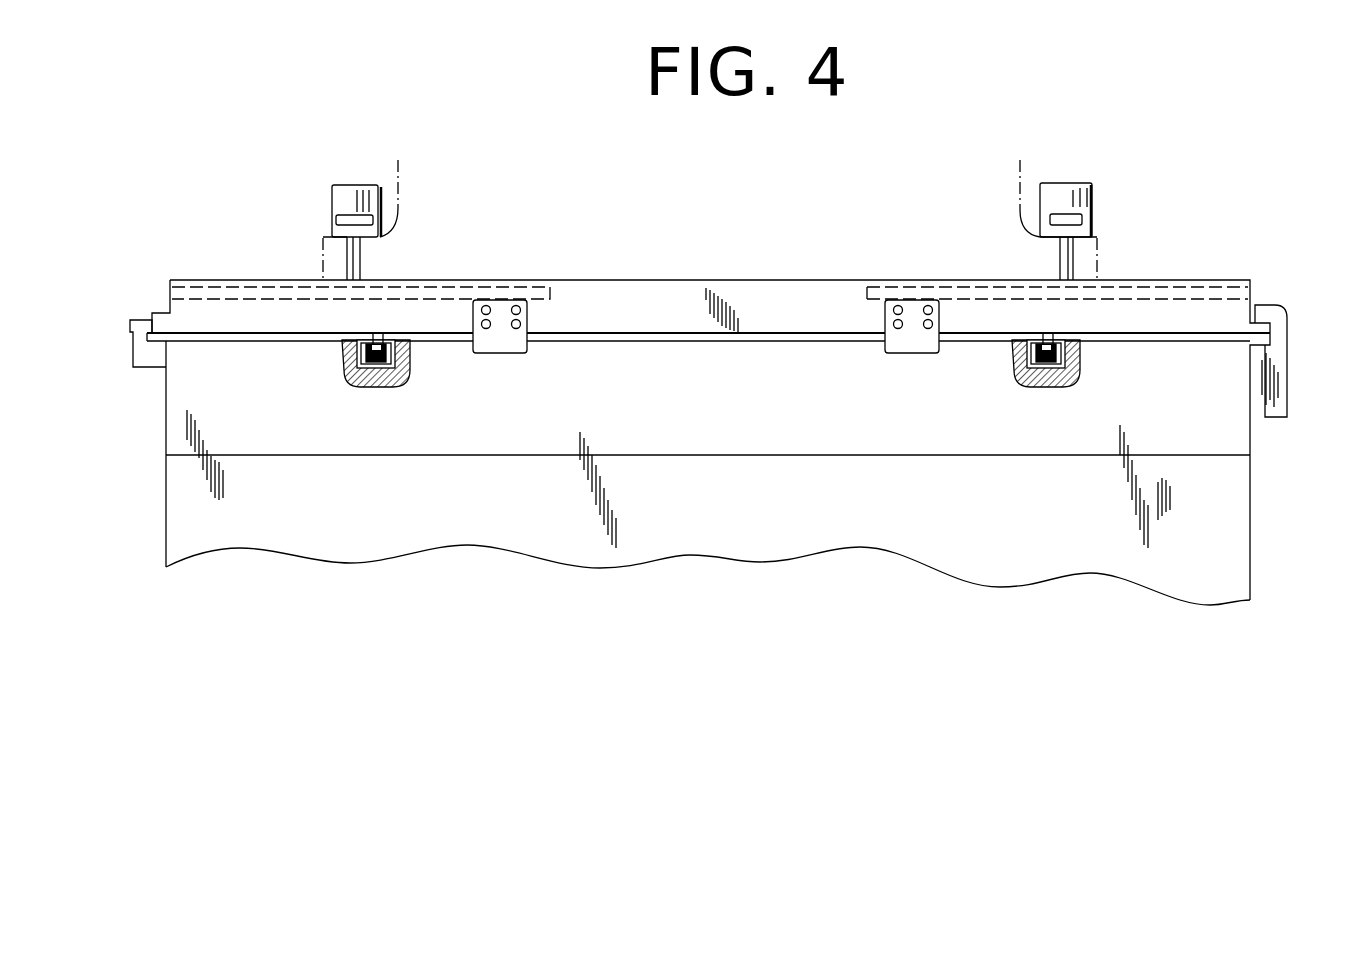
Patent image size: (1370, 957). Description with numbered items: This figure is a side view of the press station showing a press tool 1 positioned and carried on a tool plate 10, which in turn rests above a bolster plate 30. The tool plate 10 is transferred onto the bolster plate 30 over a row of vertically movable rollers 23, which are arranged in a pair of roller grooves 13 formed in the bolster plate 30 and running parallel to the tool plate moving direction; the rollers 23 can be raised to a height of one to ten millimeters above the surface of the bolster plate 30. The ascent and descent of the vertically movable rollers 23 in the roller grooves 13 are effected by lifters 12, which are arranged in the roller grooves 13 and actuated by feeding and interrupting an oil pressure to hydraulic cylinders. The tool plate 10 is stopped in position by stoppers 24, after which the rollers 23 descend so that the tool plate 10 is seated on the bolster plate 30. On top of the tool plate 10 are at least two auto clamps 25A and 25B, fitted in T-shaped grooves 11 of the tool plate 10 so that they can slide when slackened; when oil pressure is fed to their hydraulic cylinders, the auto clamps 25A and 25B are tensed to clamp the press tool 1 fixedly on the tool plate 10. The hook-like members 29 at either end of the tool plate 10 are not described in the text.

The press tool 1 is at (717, 256).
The tool plate 10 is at (637, 303).
The T-shaped grooves 11 is at (237, 288).
The lifters 12 is at (343, 367).
The roller grooves 13 is at (403, 367).
The vertically movable rollers 23 is at (377, 340).
The stoppers 24 is at (502, 342).
The auto clamp 25A is at (1090, 202).
The auto clamp 25B is at (342, 195).
The hook 29 is at (153, 357).
The bolster plate 30 is at (790, 437).